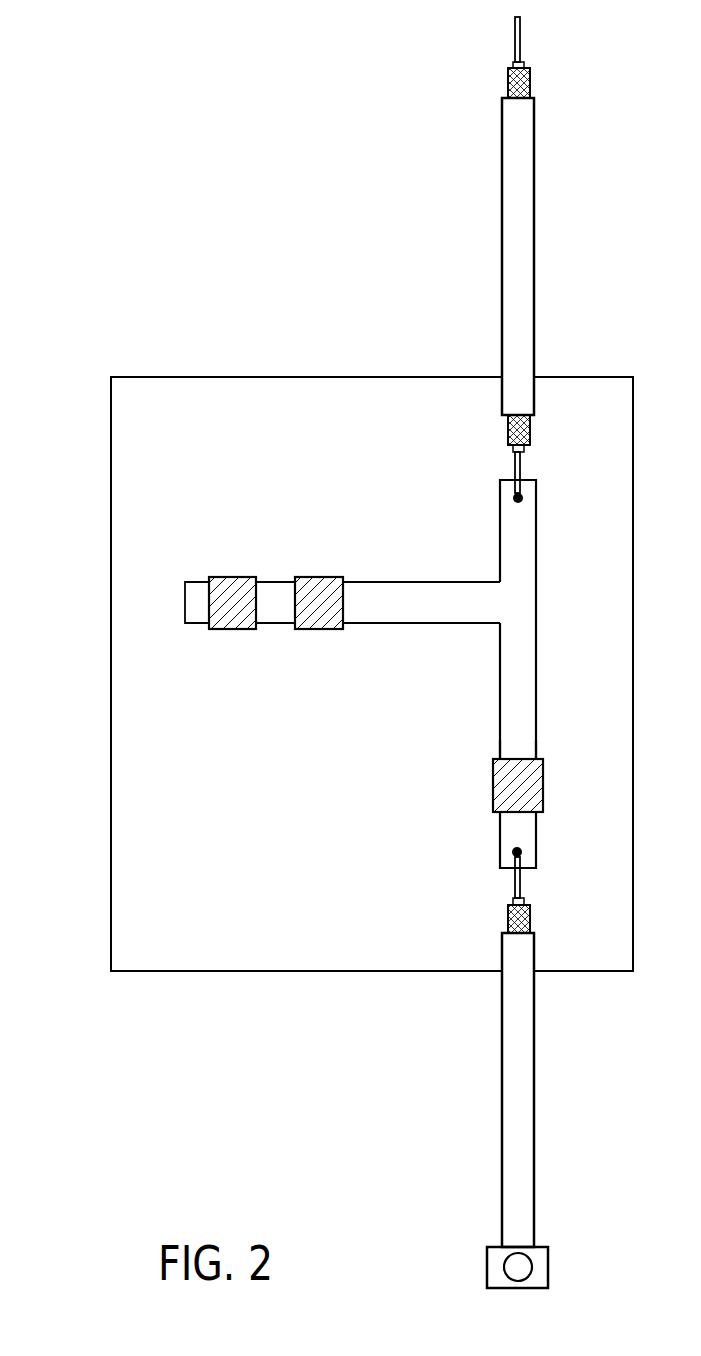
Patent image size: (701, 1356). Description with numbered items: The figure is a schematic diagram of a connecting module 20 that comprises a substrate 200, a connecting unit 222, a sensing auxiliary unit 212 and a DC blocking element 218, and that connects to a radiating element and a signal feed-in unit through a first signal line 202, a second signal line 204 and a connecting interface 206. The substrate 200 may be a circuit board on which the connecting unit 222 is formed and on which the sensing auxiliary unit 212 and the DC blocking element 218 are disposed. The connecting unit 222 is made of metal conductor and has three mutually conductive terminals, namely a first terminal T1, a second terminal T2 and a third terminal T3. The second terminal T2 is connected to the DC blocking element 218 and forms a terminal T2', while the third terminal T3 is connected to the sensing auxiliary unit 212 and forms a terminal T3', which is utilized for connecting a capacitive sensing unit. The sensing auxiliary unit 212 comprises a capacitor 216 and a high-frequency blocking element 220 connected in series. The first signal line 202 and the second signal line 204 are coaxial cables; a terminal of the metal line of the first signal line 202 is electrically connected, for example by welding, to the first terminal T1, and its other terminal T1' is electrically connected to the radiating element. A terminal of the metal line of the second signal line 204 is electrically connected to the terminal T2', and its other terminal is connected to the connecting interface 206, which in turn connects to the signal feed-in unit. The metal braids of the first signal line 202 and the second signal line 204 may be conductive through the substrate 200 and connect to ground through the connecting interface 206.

The connecting module 20 is at (168, 209).
The substrate 200 is at (180, 420).
The first signal line 202 is at (518, 153).
The second signal line 204 is at (518, 1072).
The connecting interface 206 is at (543, 1263).
The sensing auxiliary unit 212 is at (352, 691).
The capacitor 216 is at (237, 615).
The DC blocking element 218 is at (540, 783).
The high-frequency blocking element 220 is at (321, 615).
The connecting unit 222 is at (520, 535).
The first terminal T1 is at (548, 490).
The terminal T1' is at (473, 39).
The second terminal T2 is at (541, 745).
The terminal T2' is at (473, 852).
The third terminal T3 is at (421, 583).
The terminal T3' is at (177, 581).